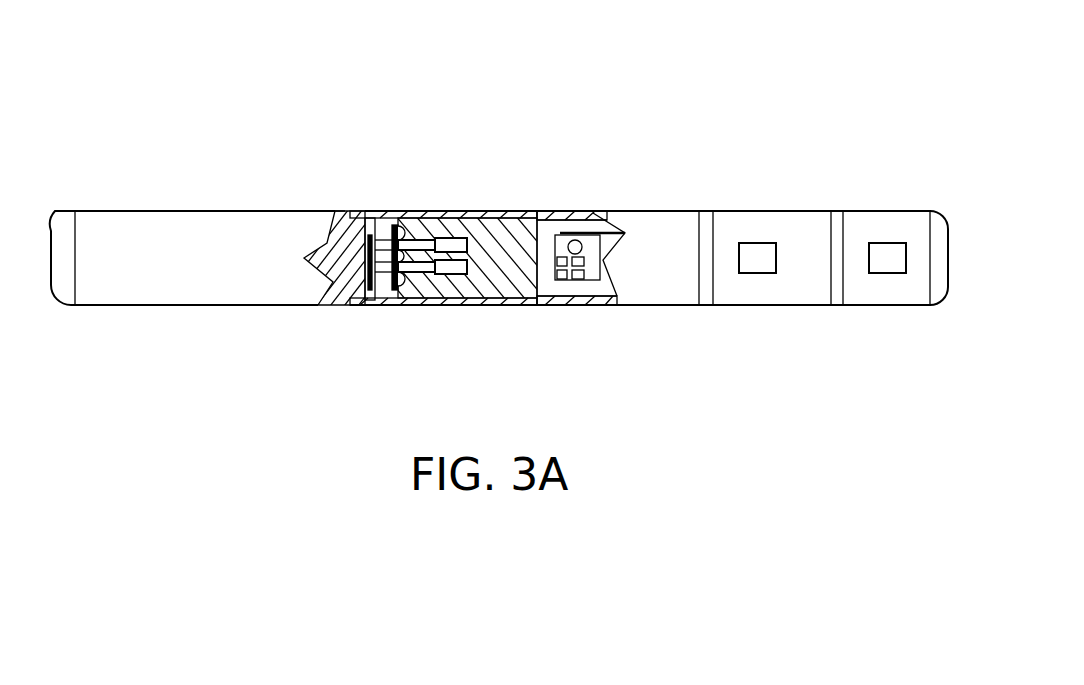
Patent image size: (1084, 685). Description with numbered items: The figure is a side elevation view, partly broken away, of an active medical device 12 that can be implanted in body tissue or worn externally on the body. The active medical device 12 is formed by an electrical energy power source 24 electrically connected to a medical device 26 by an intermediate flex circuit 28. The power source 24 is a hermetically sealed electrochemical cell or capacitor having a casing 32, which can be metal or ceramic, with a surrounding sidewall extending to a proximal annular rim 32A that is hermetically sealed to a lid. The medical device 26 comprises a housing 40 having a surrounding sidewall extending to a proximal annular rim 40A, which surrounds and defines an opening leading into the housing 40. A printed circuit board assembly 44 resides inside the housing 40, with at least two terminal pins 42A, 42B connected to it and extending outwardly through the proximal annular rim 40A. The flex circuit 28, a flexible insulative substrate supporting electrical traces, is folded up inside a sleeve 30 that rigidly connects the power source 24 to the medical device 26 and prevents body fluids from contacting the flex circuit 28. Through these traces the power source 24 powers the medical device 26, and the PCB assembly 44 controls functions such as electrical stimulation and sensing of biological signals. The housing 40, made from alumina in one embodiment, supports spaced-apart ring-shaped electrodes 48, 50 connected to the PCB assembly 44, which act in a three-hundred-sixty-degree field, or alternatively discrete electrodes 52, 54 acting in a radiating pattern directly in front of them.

The active medical device 12 is at (641, 92).
The electrical energy power source 24 is at (213, 200).
The medical device 26 is at (780, 193).
The flex circuit 28 is at (383, 265).
The sleeve 30 is at (375, 211).
The casing 32 is at (203, 273).
The proximal annular rim 32A is at (353, 214).
The housing 40 is at (808, 280).
The proximal annular rim 40A is at (470, 299).
The terminal pin 42A is at (428, 273).
The terminal pin 42B is at (431, 242).
The printed circuit board assembly 44 is at (592, 216).
The ring-shaped electrode 48 is at (835, 217).
The ring-shaped electrode 50 is at (707, 217).
The discrete electrode 52 is at (887, 258).
The discrete electrode 54 is at (758, 258).